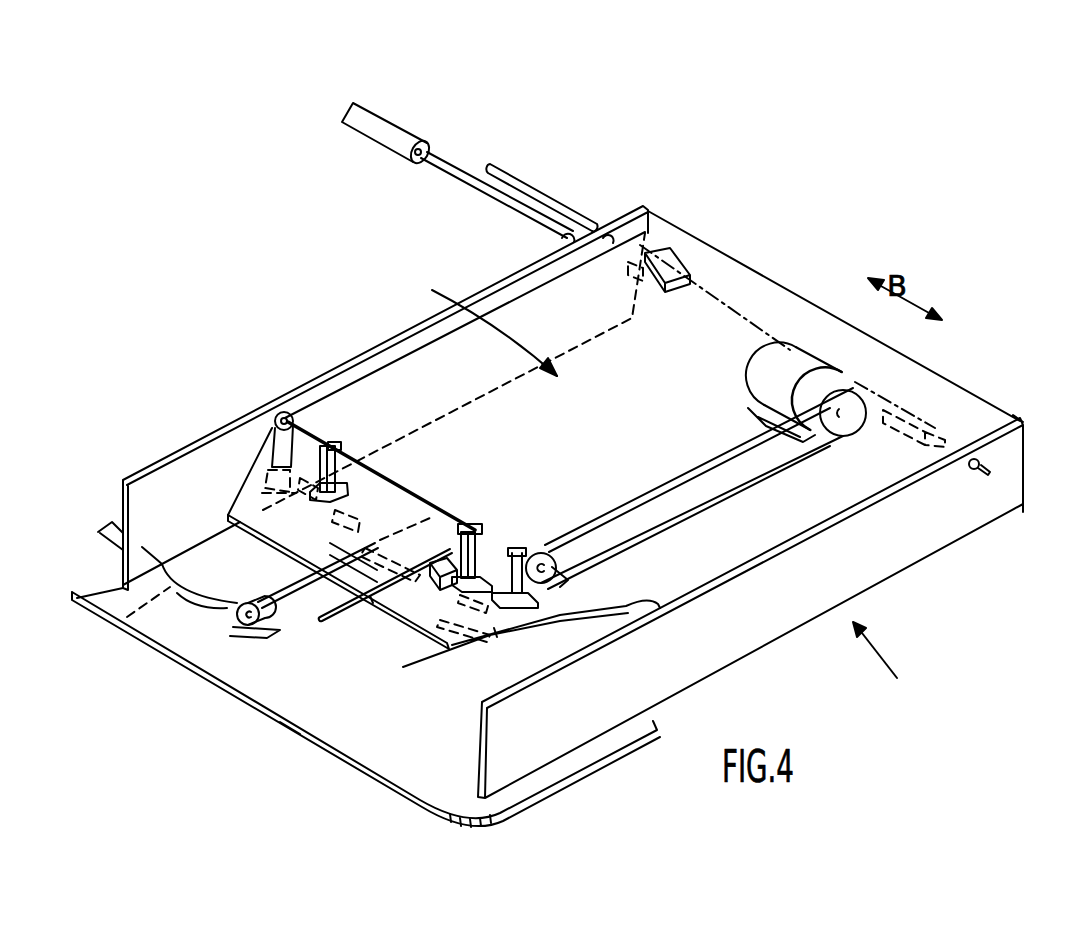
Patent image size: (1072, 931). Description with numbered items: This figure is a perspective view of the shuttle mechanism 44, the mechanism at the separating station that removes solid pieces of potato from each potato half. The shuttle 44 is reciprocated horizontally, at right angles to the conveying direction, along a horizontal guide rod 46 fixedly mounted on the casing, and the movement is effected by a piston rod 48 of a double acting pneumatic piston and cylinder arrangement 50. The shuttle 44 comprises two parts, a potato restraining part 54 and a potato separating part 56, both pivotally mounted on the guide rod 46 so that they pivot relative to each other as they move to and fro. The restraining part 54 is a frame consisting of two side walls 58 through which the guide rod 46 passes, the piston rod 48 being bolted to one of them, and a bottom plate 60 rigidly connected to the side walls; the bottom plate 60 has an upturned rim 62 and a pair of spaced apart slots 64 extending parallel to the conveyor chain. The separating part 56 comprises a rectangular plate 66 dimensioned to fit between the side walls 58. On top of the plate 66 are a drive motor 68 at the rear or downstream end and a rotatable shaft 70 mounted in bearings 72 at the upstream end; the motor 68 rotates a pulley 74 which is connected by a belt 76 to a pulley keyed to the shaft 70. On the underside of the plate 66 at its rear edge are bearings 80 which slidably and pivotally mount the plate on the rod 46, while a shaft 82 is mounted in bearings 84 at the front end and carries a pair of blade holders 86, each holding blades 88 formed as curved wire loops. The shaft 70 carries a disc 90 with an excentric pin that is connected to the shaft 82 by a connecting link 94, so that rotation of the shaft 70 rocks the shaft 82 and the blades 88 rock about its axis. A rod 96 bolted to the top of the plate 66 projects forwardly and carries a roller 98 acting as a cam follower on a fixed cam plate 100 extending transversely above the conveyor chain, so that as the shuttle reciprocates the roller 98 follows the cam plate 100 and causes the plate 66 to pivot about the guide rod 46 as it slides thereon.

The shuttle mechanism 44 is at (887, 667).
The guide rod 46 is at (745, 310).
The piston rod 48 is at (463, 183).
The piston and cylinder arrangement 50 is at (391, 146).
The potato restraining part 54 is at (1005, 488).
The potato separating part 56 is at (454, 371).
The side walls 58 is at (573, 502).
The bottom plate 60 is at (366, 707).
The upturned rim 62 is at (288, 742).
The slots 64 is at (425, 668).
The rectangular plate 66 is at (812, 318).
The drive motor 68 is at (752, 395).
The rotatable shaft 70 is at (409, 489).
The bearings 72 is at (484, 525).
The pulley 74 is at (842, 423).
The belt 76 is at (727, 497).
The bearings 80 is at (675, 258).
The shaft 82 is at (319, 530).
The bearings 84 is at (438, 598).
The blade holders 86 is at (430, 638).
The blades 88 is at (497, 640).
The disc 90 is at (284, 410).
The connecting link 94 is at (268, 430).
The rod 96 is at (257, 598).
The roller 98 is at (240, 627).
The cam plate 100 is at (118, 622).